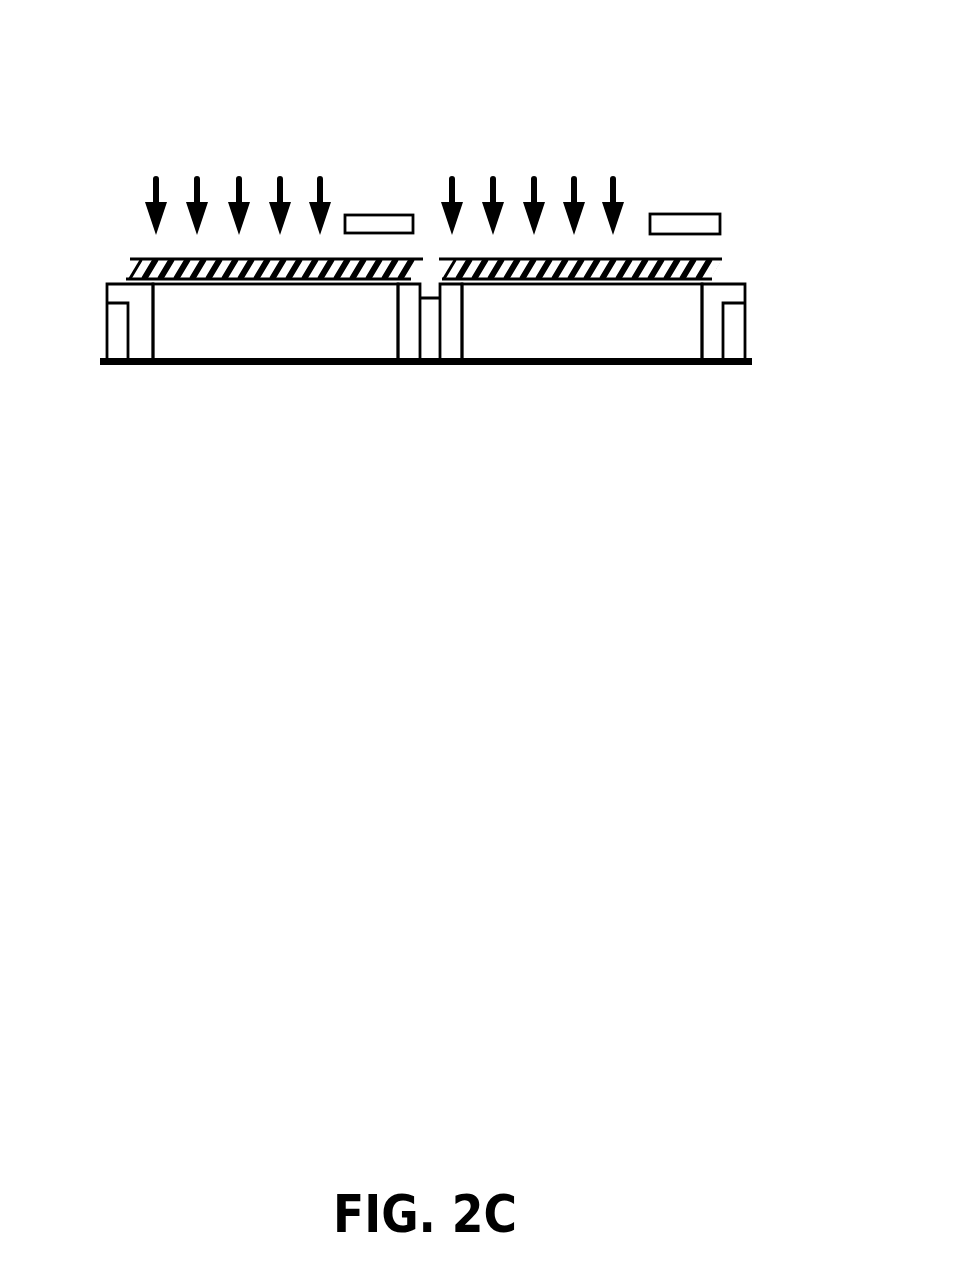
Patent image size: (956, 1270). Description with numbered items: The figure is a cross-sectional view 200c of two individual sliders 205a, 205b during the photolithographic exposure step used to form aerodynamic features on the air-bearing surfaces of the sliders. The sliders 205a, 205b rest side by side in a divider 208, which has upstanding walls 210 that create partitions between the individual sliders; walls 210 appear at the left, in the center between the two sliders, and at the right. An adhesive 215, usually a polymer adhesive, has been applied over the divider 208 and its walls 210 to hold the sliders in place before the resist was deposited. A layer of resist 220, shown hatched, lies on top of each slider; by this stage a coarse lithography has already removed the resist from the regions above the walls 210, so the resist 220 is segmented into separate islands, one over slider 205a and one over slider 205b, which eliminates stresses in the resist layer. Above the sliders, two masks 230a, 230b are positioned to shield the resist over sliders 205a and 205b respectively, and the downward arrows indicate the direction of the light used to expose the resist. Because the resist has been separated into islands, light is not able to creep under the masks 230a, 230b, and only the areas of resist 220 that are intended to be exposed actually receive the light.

The cross-sectional view 200c is at (443, 54).
The slider 205a is at (307, 332).
The slider 205b is at (610, 332).
The divider 208 is at (190, 365).
The divider wall 210 is at (745, 332).
The adhesive 215 is at (106, 296).
The resist 220 is at (160, 258).
The mask 230a is at (367, 215).
The mask 230b is at (688, 214).